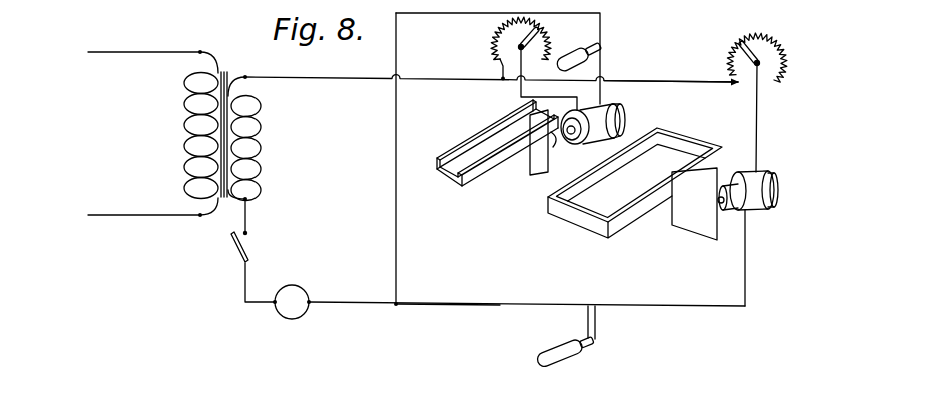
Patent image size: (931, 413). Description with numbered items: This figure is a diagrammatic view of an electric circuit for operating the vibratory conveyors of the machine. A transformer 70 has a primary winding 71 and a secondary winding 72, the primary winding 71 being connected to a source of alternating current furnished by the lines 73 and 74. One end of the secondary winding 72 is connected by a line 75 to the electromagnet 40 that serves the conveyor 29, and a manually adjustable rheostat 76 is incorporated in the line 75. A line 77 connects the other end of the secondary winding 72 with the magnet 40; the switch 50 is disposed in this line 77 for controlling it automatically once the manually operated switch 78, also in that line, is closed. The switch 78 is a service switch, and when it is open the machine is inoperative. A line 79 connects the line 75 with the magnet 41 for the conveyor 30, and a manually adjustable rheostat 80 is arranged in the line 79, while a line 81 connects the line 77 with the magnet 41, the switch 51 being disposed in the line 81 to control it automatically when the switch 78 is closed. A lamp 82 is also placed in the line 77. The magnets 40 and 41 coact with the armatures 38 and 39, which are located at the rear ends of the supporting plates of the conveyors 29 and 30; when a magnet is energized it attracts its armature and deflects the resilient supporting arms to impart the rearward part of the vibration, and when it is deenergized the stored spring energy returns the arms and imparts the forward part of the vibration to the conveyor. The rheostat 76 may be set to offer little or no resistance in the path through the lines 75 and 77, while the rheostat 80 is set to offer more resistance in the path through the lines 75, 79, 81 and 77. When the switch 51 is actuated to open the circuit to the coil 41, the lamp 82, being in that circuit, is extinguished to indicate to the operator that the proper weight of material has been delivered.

The transformer 70 is at (254, 26).
The primary winding 71 is at (184, 121).
The secondary winding 72 is at (262, 125).
The line 73 is at (96, 54).
The line 74 is at (116, 214).
The line 75 is at (687, 65).
The manually adjustable rheostat 76 is at (787, 58).
The line 77 is at (447, 292).
The manually operated switch 78 is at (252, 250).
The line 79 is at (516, 94).
The manually adjustable rheostat 80 is at (497, 56).
The line 81 is at (420, 22).
The lamp 82 is at (300, 293).
The conveyor 30 is at (485, 131).
The armature 39 is at (552, 143).
The electromagnet 41 is at (622, 116).
The conveyor 29 is at (711, 115).
The armature 38 is at (716, 212).
The electromagnet 40 is at (775, 190).
The switch 50 is at (567, 346).
The switch 51 is at (588, 48).